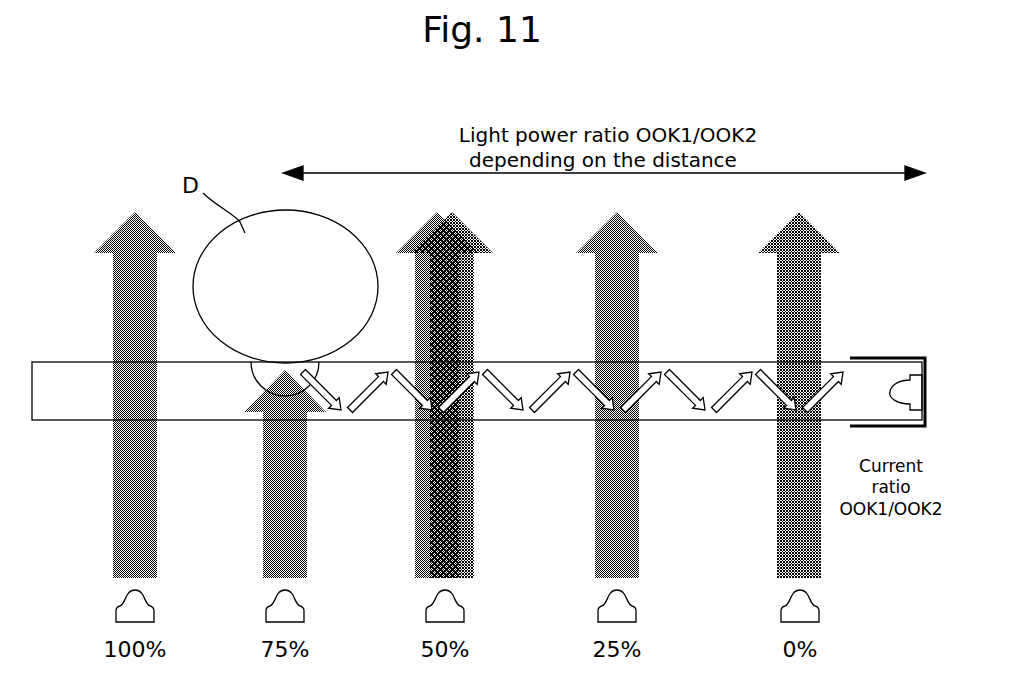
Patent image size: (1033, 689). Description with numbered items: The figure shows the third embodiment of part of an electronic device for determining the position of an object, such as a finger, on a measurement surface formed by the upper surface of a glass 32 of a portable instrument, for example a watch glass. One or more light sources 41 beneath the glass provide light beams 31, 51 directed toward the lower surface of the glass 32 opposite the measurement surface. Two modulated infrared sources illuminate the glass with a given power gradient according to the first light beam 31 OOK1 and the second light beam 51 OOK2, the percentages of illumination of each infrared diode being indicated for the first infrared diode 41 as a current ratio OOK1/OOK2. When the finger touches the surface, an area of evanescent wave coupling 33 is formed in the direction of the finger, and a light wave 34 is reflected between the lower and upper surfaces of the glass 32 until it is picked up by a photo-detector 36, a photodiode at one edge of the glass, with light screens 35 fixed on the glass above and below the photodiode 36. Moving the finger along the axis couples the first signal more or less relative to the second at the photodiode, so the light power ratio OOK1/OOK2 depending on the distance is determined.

The first light beam 31 is at (131, 532).
The glass 32 is at (68, 410).
The light coupling lens 33 is at (243, 393).
The light wave 34 is at (724, 366).
The light screen 35 is at (870, 357).
The photo-detector 36 is at (910, 388).
The light source 41 is at (131, 607).
The second light beam 51 is at (790, 527).